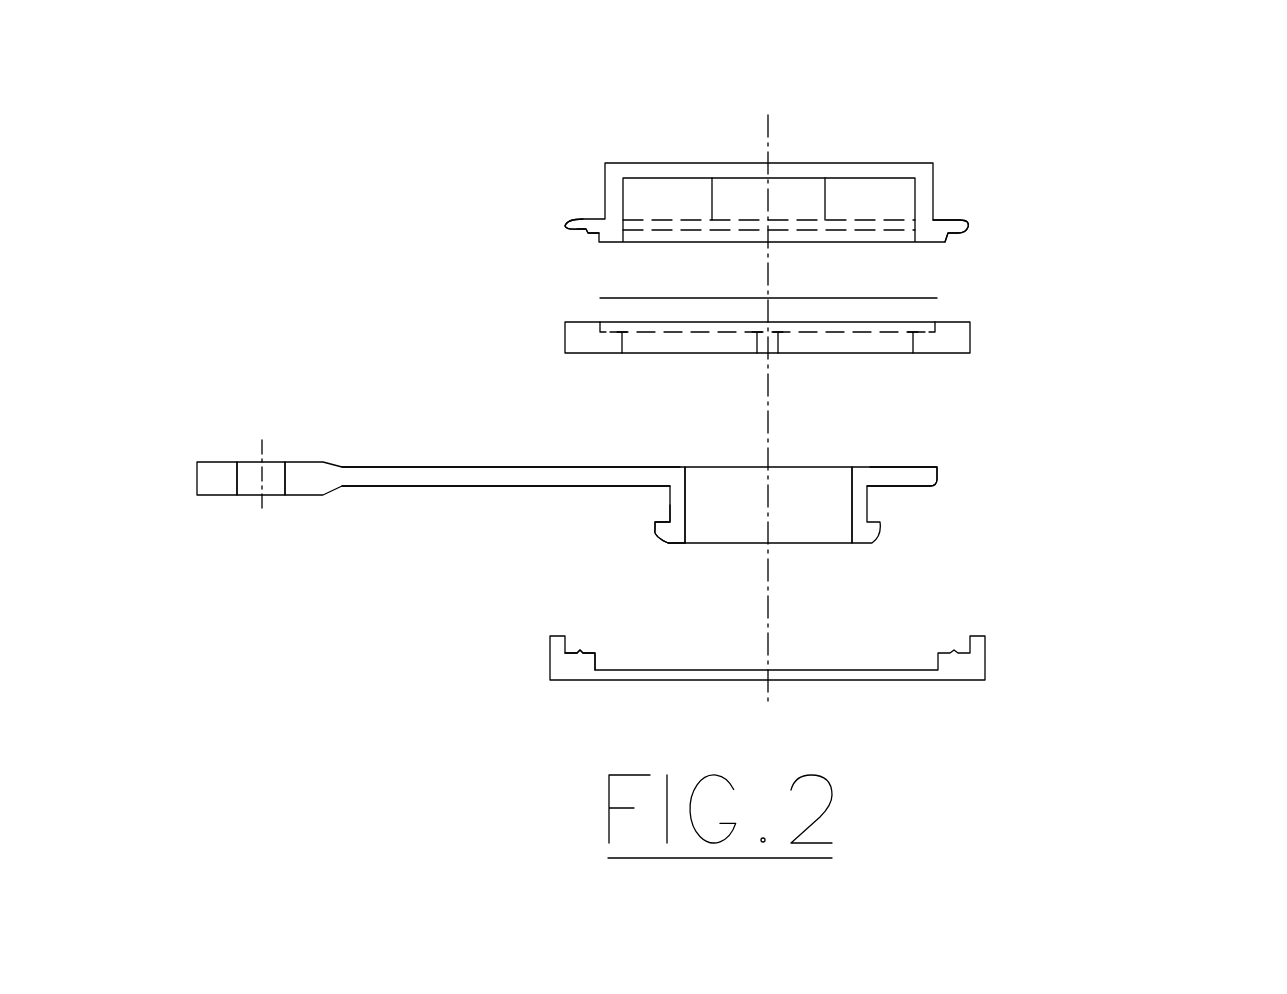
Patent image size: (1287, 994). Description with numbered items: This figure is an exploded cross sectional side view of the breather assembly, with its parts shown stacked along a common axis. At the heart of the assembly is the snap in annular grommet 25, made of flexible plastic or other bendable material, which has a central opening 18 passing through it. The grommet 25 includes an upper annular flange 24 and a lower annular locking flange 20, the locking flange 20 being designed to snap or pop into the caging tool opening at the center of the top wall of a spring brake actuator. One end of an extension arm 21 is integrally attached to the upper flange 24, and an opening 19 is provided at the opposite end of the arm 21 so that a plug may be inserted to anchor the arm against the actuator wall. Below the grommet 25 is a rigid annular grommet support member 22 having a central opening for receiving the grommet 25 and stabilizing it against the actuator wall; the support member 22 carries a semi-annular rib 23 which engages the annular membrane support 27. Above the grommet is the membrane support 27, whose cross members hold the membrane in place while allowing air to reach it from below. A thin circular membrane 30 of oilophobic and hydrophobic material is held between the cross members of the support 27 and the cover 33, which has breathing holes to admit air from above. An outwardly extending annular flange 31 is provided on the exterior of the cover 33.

The cover 33 is at (935, 200).
The annular flange 31 is at (575, 218).
The membrane 30 is at (958, 299).
The annular membrane support 27 is at (972, 356).
The extension arm 21 is at (445, 467).
The opening 19 is at (280, 462).
The upper annular flange 24 is at (935, 488).
The lower annular locking flange 20 is at (723, 517).
The snap in annular grommet 25 is at (678, 502).
The central opening 18 is at (768, 537).
The semi-annular rib 23 is at (580, 652).
The grommet support member 22 is at (889, 683).